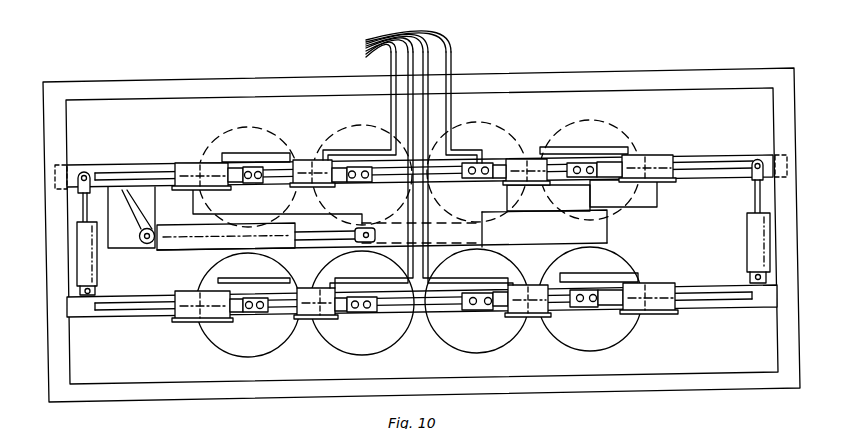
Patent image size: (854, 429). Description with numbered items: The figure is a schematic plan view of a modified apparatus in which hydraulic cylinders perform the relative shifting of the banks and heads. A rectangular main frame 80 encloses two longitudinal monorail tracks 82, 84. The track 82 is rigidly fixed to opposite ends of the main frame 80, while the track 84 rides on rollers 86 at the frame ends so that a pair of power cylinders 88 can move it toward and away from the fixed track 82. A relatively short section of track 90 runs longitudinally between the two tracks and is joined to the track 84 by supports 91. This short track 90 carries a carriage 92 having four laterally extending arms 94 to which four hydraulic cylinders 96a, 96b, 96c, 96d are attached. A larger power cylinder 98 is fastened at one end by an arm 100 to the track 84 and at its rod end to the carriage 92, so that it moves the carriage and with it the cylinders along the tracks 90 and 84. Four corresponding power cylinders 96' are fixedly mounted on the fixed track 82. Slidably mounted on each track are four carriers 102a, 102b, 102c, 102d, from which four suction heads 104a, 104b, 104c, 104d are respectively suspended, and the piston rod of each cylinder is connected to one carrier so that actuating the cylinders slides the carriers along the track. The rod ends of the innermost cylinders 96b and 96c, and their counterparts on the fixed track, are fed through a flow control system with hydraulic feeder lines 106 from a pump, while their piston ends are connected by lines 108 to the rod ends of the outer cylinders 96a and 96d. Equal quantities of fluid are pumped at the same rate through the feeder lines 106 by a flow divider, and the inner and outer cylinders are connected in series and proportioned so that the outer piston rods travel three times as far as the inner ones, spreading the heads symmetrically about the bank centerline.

The main frame 80 is at (600, 68).
The monorail track 82 is at (703, 307).
The monorail track 84 is at (702, 177).
The rollers 86 is at (55, 176).
The power cylinders 88 is at (98, 262).
The section of track 90 is at (605, 235).
The supports 91 is at (116, 196).
The carriage 92 is at (480, 230).
The arms 94 is at (530, 189).
The hydraulic cylinder 96a is at (645, 156).
The hydraulic cylinder 96b is at (522, 159).
The hydraulic cylinder 96c is at (320, 141).
The hydraulic cylinder 96d is at (184, 163).
The power cylinders 96' is at (425, 302).
The power cylinder 98 is at (210, 242).
The arm 100 is at (145, 208).
The carrier 102a is at (575, 163).
The carrier 102b is at (473, 163).
The carrier 102c is at (357, 167).
The carrier 102d is at (253, 167).
The suction head 104a is at (605, 111).
The suction head 104b is at (505, 113).
The suction head 104c is at (355, 116).
The suction head 104d is at (232, 130).
The hydraulic feeder lines 106 is at (418, 159).
The lines 108 is at (281, 152).